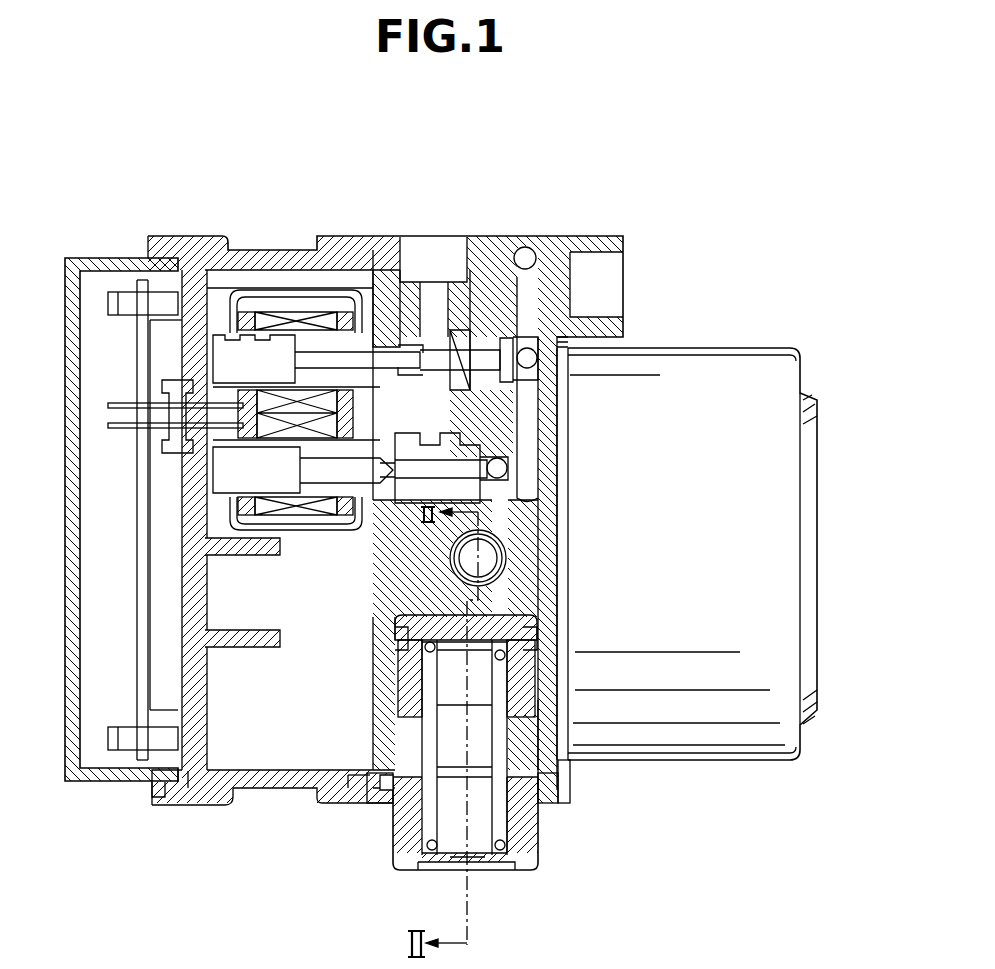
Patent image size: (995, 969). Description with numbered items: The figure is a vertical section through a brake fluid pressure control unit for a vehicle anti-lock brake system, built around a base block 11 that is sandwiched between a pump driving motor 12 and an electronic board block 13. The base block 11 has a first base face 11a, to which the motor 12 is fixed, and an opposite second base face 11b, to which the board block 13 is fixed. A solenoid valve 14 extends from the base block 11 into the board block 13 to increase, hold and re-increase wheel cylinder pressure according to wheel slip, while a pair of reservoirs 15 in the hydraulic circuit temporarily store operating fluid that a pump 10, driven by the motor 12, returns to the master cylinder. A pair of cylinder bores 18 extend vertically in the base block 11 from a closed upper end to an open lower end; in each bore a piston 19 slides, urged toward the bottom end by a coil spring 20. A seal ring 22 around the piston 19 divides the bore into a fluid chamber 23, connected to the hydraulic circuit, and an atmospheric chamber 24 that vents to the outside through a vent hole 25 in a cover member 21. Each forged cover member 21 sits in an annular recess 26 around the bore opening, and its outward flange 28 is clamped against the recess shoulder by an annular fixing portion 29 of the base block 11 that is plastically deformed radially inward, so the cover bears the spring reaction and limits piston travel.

The pump 10 is at (493, 560).
The base block 11 is at (578, 228).
The first base face 11a is at (562, 405).
The second base face 11b is at (370, 283).
The pump driving motor 12 is at (798, 340).
The electronic board block 13 is at (73, 252).
The solenoid valve 14 is at (320, 322).
The reservoir 15 is at (537, 713).
The cylinder bore 18 is at (400, 753).
The piston 19 is at (523, 672).
The coil spring 20 is at (533, 820).
The cover member 21 is at (405, 822).
The seal ring 22 is at (538, 637).
The fluid chamber 23 is at (385, 622).
The atmospheric chamber 24 is at (443, 825).
The vent hole 25 is at (473, 857).
The annular recess 26 is at (390, 785).
The outward flange 28 is at (540, 785).
The annular fixing portion 29 is at (540, 805).